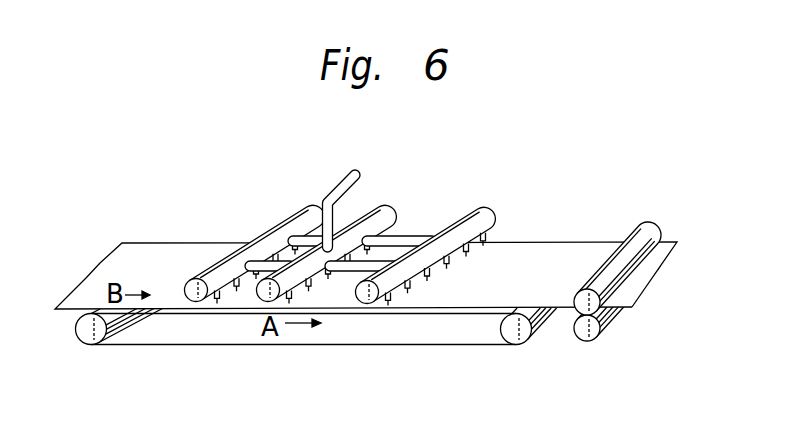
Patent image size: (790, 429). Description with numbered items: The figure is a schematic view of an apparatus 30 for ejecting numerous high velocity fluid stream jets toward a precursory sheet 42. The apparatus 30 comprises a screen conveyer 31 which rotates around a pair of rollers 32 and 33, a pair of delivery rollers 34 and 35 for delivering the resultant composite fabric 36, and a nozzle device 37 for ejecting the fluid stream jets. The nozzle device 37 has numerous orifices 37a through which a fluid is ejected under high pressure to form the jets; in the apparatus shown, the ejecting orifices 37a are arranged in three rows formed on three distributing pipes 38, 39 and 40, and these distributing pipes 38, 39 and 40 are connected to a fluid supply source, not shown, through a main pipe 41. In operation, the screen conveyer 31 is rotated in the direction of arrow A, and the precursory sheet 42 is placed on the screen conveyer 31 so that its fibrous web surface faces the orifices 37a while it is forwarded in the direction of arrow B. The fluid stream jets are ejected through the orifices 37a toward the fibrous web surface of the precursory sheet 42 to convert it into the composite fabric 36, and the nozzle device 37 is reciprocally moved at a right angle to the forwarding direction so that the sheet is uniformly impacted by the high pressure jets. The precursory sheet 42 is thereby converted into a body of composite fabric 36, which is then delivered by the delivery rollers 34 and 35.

The apparatus 30 is at (342, 256).
The screen conveyer 31 is at (170, 350).
The roller 32 is at (86, 346).
The roller 33 is at (523, 346).
The delivery roller 34 is at (598, 340).
The delivery roller 35 is at (612, 322).
The composite fabric 36 is at (573, 252).
The nozzle device 37 is at (255, 223).
The orifices 37a is at (386, 306).
The distributing pipe 38 is at (300, 223).
The distributing pipe 39 is at (393, 211).
The distributing pipe 40 is at (427, 279).
The main pipe 41 is at (368, 171).
The precursory sheet 42 is at (143, 260).